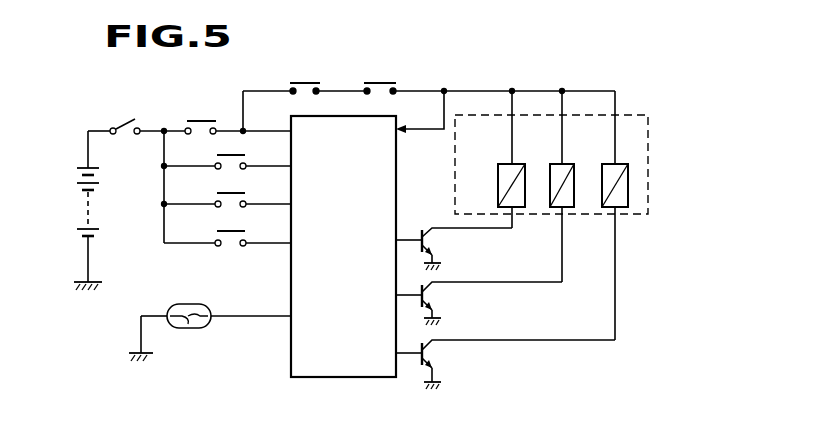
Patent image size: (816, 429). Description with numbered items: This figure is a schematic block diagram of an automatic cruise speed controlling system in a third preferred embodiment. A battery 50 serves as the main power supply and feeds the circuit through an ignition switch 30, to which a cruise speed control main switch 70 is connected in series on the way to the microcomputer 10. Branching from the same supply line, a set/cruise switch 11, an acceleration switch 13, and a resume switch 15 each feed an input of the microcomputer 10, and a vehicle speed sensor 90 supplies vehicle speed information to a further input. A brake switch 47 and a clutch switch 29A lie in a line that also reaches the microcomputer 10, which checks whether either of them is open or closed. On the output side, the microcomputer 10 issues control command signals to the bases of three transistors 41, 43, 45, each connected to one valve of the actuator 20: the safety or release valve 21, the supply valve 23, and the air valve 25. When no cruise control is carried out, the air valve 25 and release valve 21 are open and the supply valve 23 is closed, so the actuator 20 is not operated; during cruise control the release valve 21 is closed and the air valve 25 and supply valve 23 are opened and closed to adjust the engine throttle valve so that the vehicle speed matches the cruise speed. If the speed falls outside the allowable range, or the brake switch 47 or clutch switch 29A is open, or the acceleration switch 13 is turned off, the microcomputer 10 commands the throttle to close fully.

The microcomputer 10 is at (291, 355).
The set/cruise switch 11 is at (213, 157).
The acceleration switch 13 is at (214, 195).
The resume switch 15 is at (214, 233).
The actuator 20 is at (636, 115).
The safety (release) valve 21 is at (500, 162).
The supply valve 23 is at (553, 162).
The air valve 25 is at (604, 162).
The clutch switch 29A is at (383, 80).
The ignition switch 30 is at (136, 120).
The transistor 41 is at (432, 240).
The transistor 43 is at (432, 294).
The transistor 45 is at (432, 353).
The brake switch 47 is at (307, 80).
The battery 50 is at (80, 204).
The cruise speed control main switch 70 is at (183, 120).
The vehicle speed sensor 90 is at (191, 304).